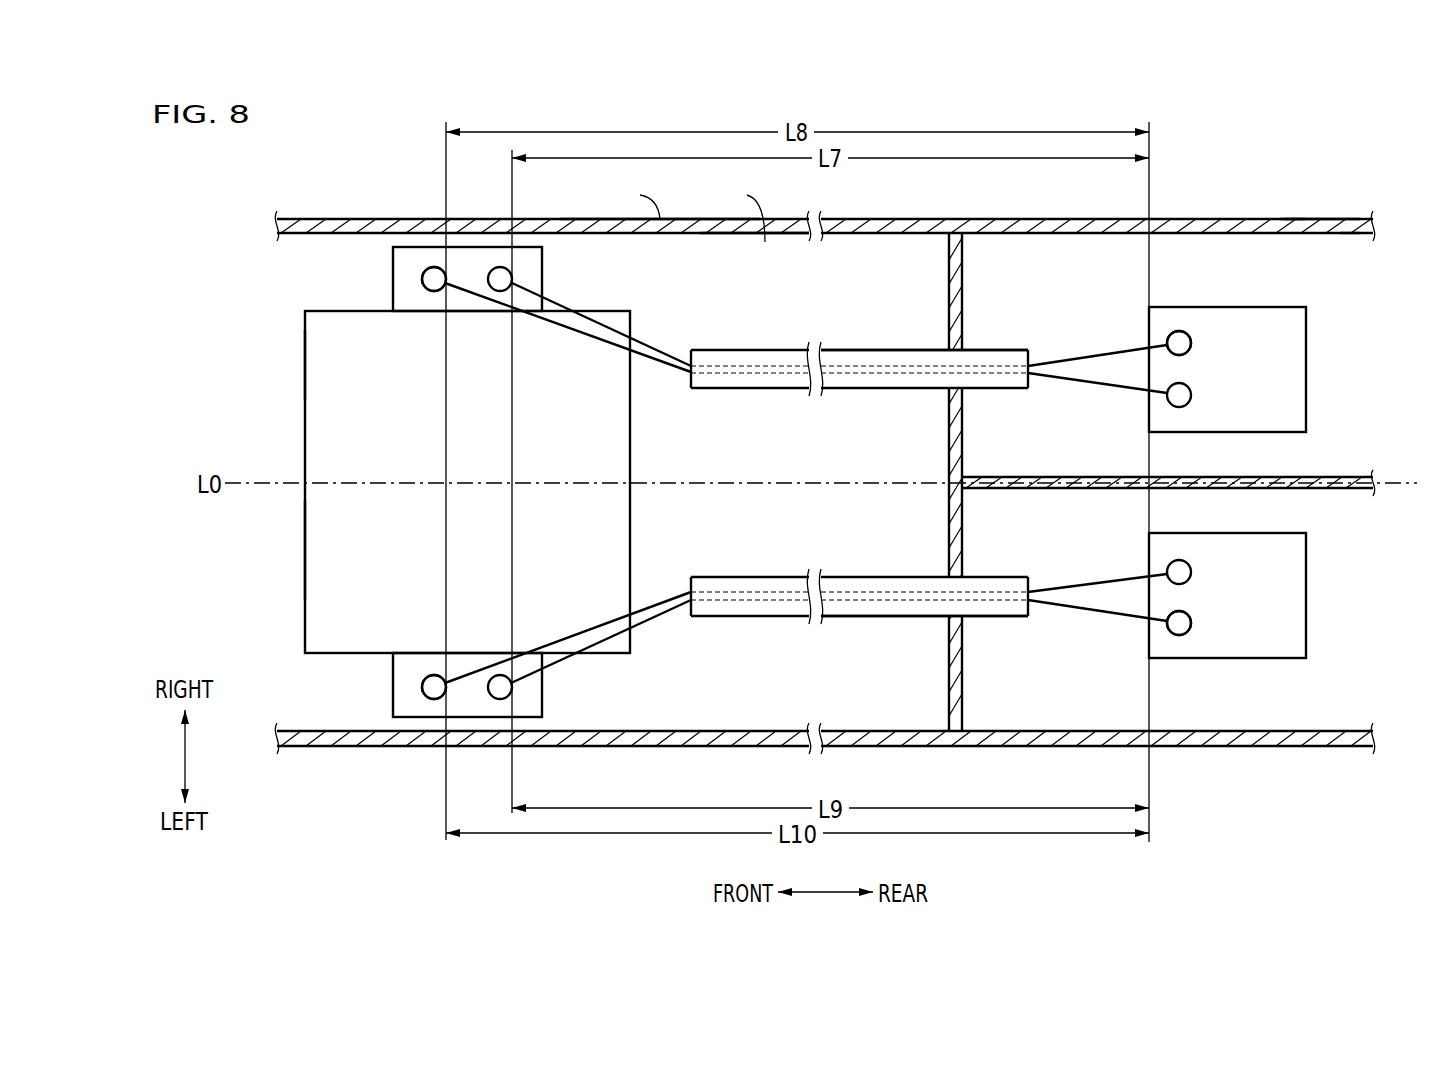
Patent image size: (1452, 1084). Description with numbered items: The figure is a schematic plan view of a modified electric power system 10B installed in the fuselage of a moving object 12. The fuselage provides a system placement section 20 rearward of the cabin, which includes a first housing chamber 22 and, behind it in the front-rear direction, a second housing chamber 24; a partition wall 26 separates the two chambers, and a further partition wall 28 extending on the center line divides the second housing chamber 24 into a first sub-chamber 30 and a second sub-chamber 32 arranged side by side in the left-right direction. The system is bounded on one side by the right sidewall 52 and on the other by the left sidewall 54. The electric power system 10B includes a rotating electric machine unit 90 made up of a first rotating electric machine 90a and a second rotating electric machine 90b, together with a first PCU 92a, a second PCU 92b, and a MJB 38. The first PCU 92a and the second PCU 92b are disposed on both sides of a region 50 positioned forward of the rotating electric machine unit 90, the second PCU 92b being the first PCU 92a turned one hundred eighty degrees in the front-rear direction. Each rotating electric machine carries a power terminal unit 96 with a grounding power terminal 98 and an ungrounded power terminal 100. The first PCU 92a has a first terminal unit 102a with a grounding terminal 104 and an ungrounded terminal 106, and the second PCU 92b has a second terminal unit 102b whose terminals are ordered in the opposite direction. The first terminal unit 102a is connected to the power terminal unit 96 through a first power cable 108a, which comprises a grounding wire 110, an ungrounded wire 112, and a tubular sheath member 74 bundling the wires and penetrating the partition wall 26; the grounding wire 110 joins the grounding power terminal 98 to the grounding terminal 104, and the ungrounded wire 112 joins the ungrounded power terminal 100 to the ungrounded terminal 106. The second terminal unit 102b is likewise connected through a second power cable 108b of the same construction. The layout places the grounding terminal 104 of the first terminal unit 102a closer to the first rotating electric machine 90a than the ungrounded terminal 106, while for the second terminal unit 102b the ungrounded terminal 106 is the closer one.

The moving object 12 is at (181, 174).
The electric power system 10B is at (262, 363).
The system placement section 20 is at (302, 210).
The first housing chamber 22 is at (754, 211).
The second housing chamber 24 is at (1360, 172).
The partition wall 26 is at (948, 528).
The partition wall 28 is at (1033, 477).
The first sub-chamber 30 is at (1295, 248).
The second sub-chamber 32 is at (1352, 520).
The MJB 38 is at (327, 552).
The region 50 is at (293, 398).
The right sidewall 52 is at (660, 199).
The left sidewall 54 is at (660, 747).
The sheath member 74 is at (746, 350).
The rotating electric machine unit 90 is at (1235, 530).
The first rotating electric machine 90a is at (1273, 323).
The second rotating electric machine 90b is at (1273, 640).
The first PCU 92a is at (402, 278).
The second PCU 92b is at (402, 685).
The power terminal unit 96 is at (1180, 326).
The grounding power terminal 98 is at (1191, 341).
The ungrounded power terminal 100 is at (1191, 393).
The first terminal unit 102a is at (429, 263).
The second terminal unit 102b is at (430, 703).
The grounding terminal 104 is at (500, 291).
The ungrounded terminal 106 is at (434, 291).
The first power cable 108a is at (885, 348).
The second power cable 108b is at (895, 617).
The grounding wire 110 is at (602, 323).
The ungrounded wire 112 is at (582, 332).